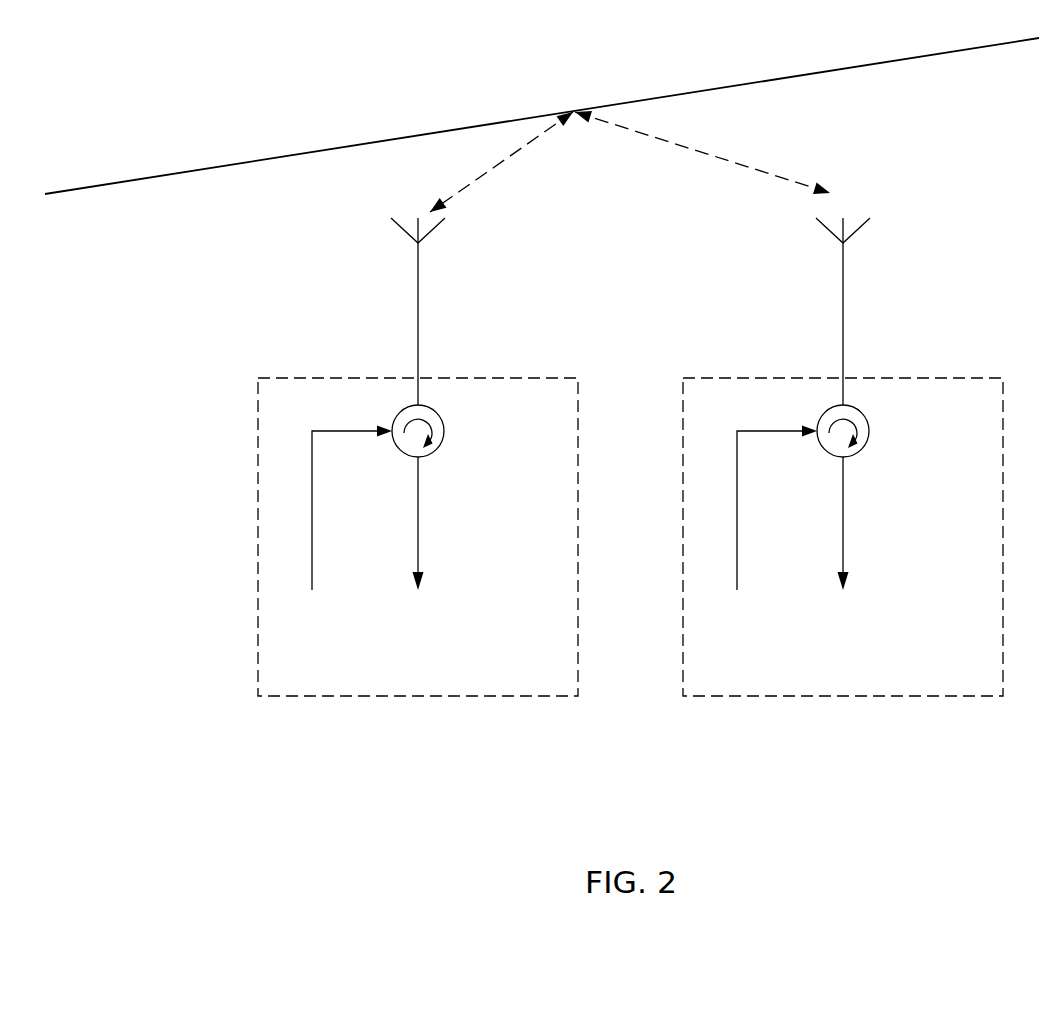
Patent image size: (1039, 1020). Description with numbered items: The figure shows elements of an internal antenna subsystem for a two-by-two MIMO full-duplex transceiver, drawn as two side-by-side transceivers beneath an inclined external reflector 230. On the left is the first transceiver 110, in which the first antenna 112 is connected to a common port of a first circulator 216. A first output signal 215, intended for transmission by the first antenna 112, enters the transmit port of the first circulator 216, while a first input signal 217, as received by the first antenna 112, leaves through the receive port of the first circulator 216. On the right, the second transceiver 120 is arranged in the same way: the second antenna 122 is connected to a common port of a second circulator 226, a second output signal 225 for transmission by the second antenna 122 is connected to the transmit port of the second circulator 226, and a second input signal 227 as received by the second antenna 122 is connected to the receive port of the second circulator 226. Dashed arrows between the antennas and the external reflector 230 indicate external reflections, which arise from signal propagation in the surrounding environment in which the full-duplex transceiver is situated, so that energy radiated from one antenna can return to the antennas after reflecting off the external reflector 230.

The external reflector 230 is at (542, 116).
The first transceiver 110 is at (537, 686).
The second transceiver 120 is at (843, 537).
The first antenna 112 is at (418, 296).
The second antenna 122 is at (893, 311).
The first circulator 216 is at (445, 430).
The second circulator 226 is at (893, 454).
The first output signal 215 is at (312, 537).
The second output signal 225 is at (787, 518).
The first input signal 217 is at (418, 537).
The second input signal 227 is at (891, 533).